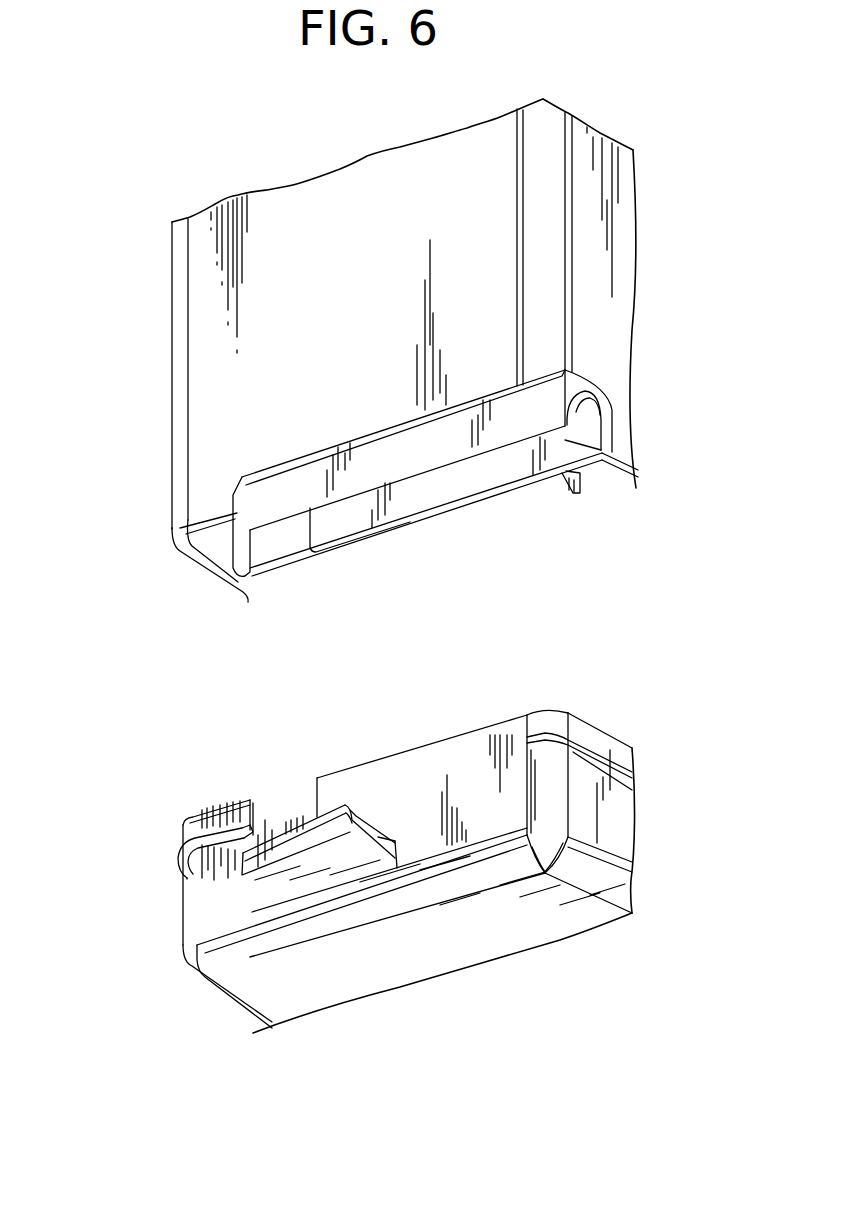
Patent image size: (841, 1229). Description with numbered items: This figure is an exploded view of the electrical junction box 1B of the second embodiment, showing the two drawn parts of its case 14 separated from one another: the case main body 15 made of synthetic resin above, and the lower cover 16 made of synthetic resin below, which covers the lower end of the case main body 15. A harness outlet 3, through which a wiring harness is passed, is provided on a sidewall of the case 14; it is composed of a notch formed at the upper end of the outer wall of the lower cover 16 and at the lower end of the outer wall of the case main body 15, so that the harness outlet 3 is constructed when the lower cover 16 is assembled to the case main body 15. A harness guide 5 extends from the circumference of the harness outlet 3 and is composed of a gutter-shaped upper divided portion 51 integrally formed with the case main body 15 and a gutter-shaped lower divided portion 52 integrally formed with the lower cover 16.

The electrical junction box 1B is at (688, 104).
The harness outlet 3 is at (270, 817).
The harness guide 5 is at (285, 653).
The case 14 is at (98, 653).
The case main body 15 is at (172, 478).
The lower cover 16 is at (184, 921).
The upper divided portion 51 is at (450, 437).
The lower divided portion 52 is at (337, 818).